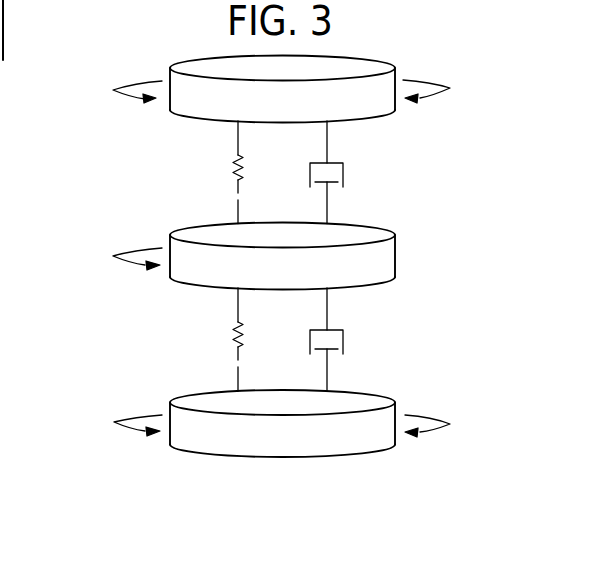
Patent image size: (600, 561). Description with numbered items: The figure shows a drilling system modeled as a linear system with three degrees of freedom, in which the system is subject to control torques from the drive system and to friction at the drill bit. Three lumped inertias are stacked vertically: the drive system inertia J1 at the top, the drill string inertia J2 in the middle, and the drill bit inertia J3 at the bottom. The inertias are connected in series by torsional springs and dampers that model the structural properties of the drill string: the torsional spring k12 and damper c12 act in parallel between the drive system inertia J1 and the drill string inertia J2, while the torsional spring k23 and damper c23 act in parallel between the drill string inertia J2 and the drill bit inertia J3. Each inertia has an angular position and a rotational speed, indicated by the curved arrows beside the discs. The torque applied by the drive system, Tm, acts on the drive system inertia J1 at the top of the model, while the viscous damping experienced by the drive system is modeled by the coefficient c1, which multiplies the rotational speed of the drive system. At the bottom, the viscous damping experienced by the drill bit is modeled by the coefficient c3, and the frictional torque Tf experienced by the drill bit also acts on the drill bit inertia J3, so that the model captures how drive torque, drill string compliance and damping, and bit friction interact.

The drive system inertia J1 is at (282, 89).
The drill string inertia J2 is at (282, 256).
The drill bit inertia J3 is at (282, 423).
The torsional spring k12 is at (218, 172).
The damper c12 is at (347, 172).
The torsional spring k23 is at (215, 339).
The damper c23 is at (348, 339).
The drive system torque Tm is at (107, 91).
The viscous damping coefficient c1 is at (453, 90).
The viscous damping coefficient c3 is at (456, 424).
The frictional torque Tf is at (465, 457).